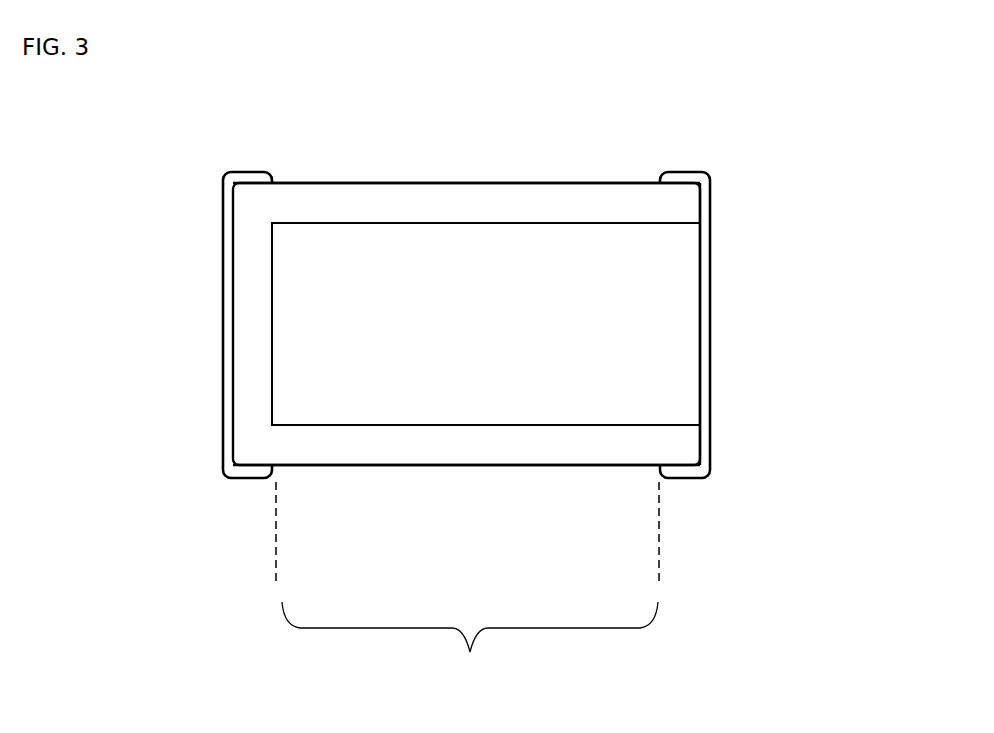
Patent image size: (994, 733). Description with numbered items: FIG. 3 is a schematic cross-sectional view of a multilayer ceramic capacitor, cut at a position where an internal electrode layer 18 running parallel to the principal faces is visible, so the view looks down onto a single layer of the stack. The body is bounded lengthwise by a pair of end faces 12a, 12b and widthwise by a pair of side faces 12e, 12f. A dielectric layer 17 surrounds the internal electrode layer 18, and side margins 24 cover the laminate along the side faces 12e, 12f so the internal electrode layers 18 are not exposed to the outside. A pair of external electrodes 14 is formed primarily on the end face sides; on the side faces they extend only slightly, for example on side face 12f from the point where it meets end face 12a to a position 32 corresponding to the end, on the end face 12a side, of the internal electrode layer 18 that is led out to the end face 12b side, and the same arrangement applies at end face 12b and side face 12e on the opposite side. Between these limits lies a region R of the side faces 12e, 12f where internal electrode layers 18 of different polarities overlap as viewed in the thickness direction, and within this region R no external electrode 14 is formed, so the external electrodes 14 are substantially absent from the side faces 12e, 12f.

The end face 12a is at (232, 300).
The end face 12b is at (712, 277).
The side face 12e is at (387, 467).
The side face 12f is at (485, 183).
The external electrode 14 is at (713, 217).
The dielectric layer 17 is at (250, 412).
The internal electrode layer 18 is at (668, 335).
The side margin 24 is at (540, 448).
The position 32 is at (270, 183).
The region R is at (467, 588).